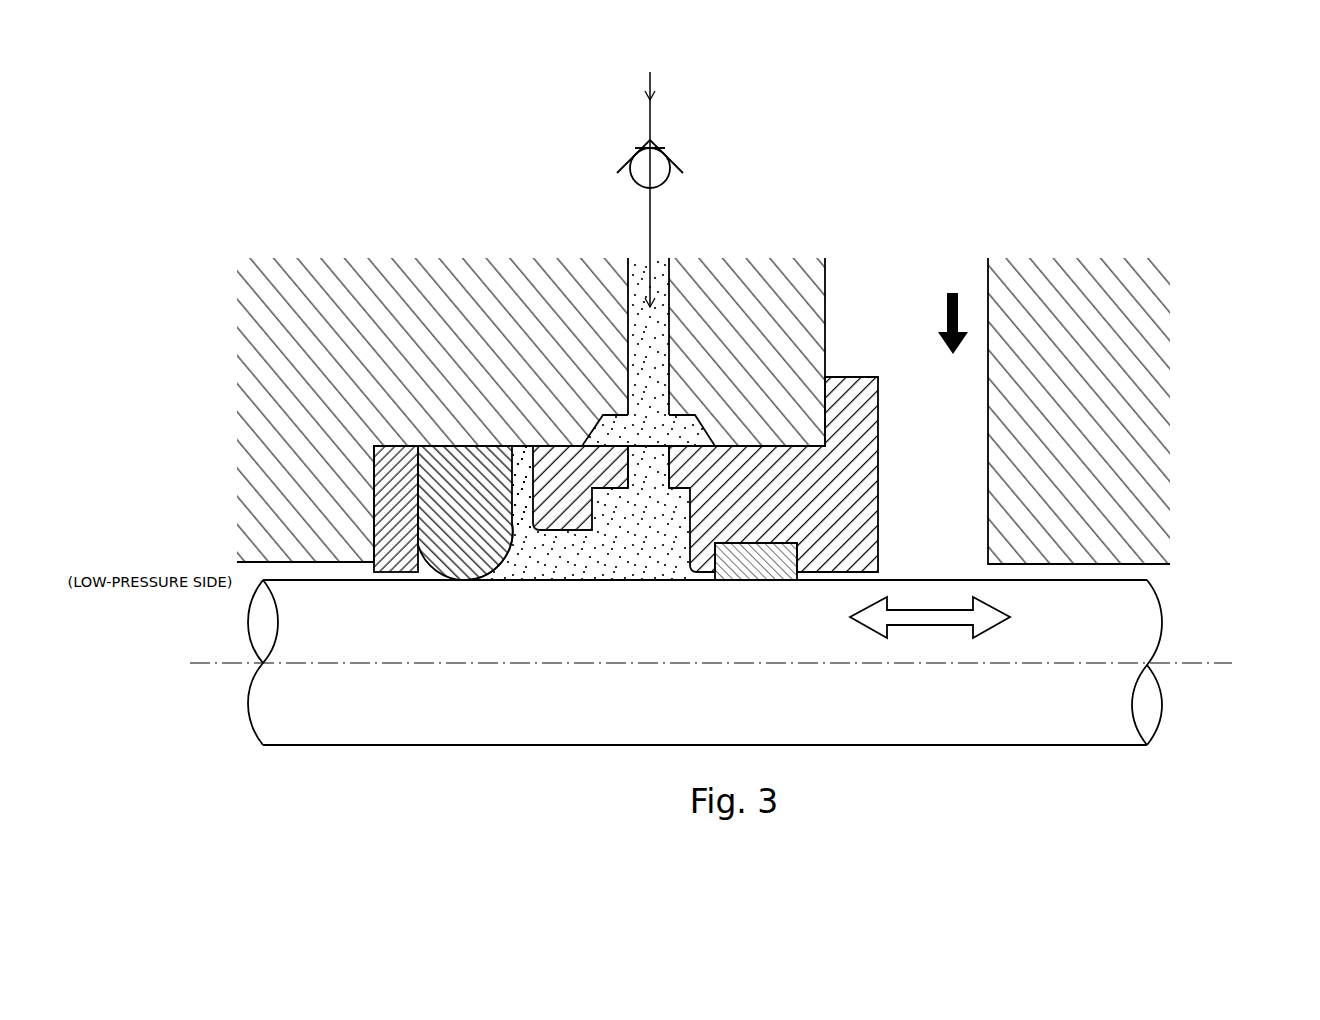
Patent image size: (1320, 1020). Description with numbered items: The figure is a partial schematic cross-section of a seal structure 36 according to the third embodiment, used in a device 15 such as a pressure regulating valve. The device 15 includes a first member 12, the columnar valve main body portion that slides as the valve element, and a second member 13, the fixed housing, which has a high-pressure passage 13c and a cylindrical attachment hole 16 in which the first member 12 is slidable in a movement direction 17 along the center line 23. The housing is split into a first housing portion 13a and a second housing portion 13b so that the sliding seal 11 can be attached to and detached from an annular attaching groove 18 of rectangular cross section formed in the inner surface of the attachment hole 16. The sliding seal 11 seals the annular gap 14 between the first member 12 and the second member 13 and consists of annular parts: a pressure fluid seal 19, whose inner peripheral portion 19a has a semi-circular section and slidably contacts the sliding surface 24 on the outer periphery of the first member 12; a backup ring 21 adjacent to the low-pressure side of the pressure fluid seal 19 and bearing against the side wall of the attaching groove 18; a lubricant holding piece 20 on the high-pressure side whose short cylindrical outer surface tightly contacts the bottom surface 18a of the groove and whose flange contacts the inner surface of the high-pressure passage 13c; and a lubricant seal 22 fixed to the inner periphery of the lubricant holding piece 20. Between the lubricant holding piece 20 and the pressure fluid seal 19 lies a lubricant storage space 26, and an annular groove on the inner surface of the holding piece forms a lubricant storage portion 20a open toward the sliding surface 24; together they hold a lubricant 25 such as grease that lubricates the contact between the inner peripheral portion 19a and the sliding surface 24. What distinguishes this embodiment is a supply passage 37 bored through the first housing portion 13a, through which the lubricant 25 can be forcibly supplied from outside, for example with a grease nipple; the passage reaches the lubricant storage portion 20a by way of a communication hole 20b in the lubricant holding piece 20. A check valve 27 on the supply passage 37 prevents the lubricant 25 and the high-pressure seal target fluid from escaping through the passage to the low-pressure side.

The sliding seal 11 is at (531, 322).
The first member 12 is at (776, 589).
The second member 13 is at (531, 349).
The first housing portion 13a is at (567, 250).
The second housing portion 13b is at (1116, 341).
The high-pressure passage 13c is at (905, 323).
The annular gap 14 is at (1016, 572).
The device 15 is at (540, 371).
The attachment hole 16 is at (1068, 565).
The movement direction 17 is at (935, 625).
The attaching groove 18 is at (431, 354).
The bottom surface of the attaching groove 18a is at (490, 551).
The pressure fluid seal 19 is at (488, 395).
The inner peripheral portion 19a is at (470, 580).
The lubricant holding piece 20 is at (722, 387).
The lubricant storage portion 20a is at (607, 492).
The communication hole 20b is at (670, 473).
The backup ring 21 is at (392, 458).
The lubricant seal 22 is at (750, 580).
The center line 23 is at (1183, 665).
The sliding surface 24 is at (921, 580).
The lubricant 25 is at (818, 478).
The lubricant storage space 26 is at (566, 395).
The check valve 27 is at (667, 152).
The seal structure 36 is at (571, 371).
The supply passage 37 is at (668, 377).